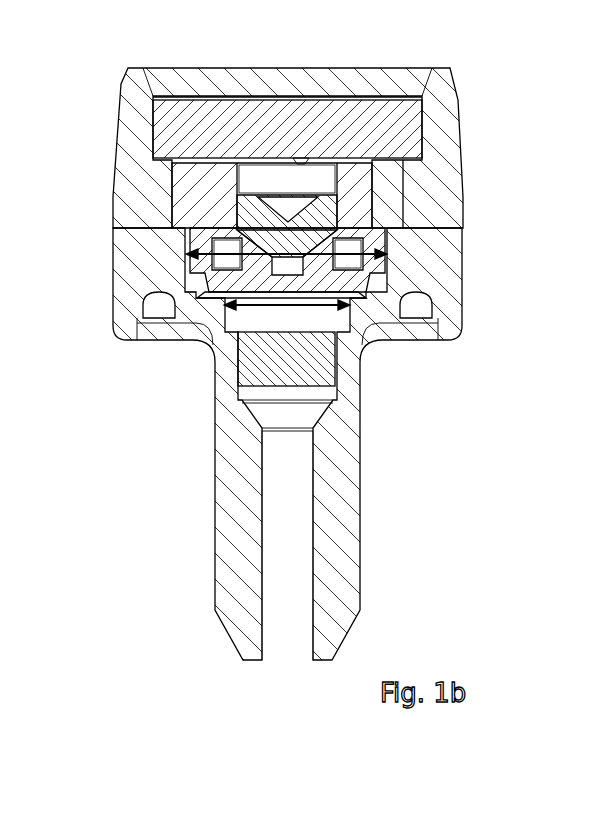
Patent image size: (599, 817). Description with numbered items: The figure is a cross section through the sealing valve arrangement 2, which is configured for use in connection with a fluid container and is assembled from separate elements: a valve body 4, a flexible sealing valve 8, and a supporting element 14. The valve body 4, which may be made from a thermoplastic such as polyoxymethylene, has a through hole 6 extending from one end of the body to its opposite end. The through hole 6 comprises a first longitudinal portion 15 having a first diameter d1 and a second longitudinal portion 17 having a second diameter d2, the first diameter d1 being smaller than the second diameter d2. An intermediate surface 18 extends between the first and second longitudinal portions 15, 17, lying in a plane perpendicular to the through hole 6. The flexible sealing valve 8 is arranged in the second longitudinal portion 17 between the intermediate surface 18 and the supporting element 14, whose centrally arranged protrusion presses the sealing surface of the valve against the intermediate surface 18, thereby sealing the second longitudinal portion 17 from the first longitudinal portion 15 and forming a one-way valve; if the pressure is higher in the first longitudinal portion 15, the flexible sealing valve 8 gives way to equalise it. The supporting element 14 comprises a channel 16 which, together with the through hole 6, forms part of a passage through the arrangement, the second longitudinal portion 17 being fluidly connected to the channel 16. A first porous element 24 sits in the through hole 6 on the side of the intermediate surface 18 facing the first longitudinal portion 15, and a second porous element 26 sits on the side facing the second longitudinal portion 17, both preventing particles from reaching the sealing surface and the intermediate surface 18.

The sealing valve arrangement 2 is at (512, 106).
The valve body 4 is at (447, 267).
The through hole 6 is at (296, 652).
The flexible sealing valve 8 is at (365, 270).
The supporting element 14 is at (362, 213).
The first longitudinal portion 15 is at (190, 318).
The channel 16 is at (392, 185).
The second longitudinal portion 17 is at (113, 292).
The intermediate surface 18 is at (197, 283).
The first porous element 24 is at (262, 363).
The second porous element 26 is at (234, 122).
The first diameter d1 is at (320, 310).
The second diameter d2 is at (342, 257).